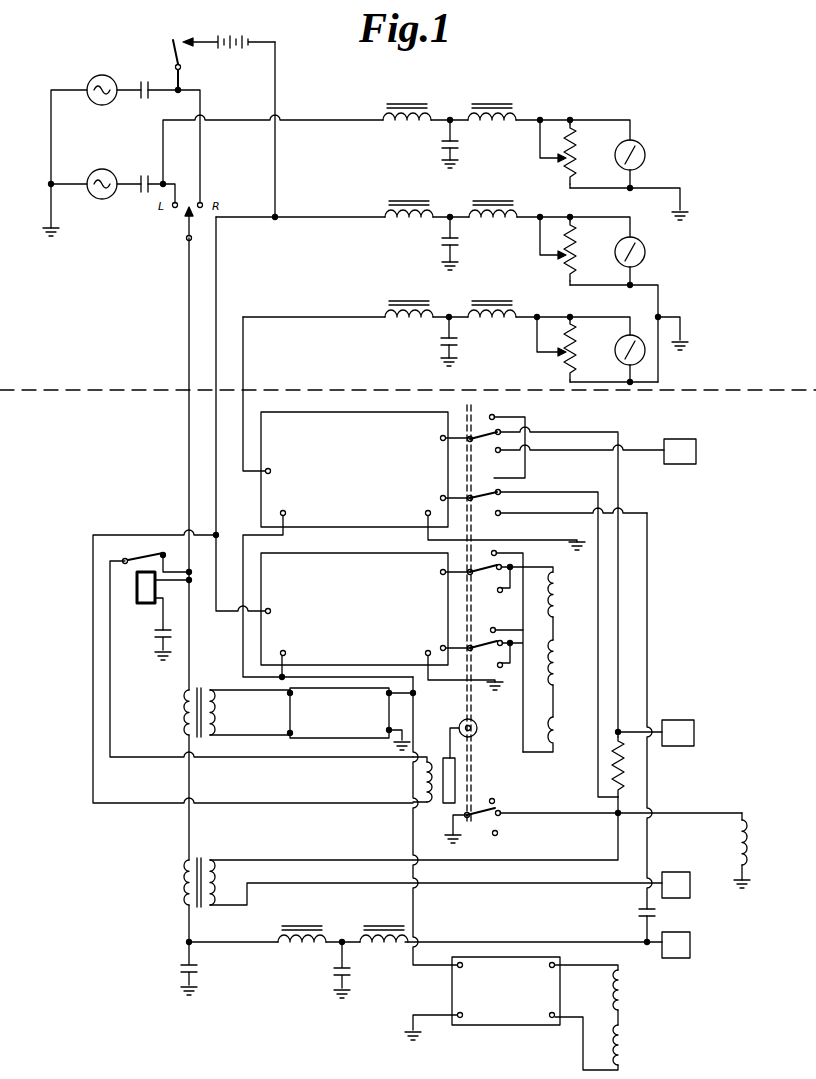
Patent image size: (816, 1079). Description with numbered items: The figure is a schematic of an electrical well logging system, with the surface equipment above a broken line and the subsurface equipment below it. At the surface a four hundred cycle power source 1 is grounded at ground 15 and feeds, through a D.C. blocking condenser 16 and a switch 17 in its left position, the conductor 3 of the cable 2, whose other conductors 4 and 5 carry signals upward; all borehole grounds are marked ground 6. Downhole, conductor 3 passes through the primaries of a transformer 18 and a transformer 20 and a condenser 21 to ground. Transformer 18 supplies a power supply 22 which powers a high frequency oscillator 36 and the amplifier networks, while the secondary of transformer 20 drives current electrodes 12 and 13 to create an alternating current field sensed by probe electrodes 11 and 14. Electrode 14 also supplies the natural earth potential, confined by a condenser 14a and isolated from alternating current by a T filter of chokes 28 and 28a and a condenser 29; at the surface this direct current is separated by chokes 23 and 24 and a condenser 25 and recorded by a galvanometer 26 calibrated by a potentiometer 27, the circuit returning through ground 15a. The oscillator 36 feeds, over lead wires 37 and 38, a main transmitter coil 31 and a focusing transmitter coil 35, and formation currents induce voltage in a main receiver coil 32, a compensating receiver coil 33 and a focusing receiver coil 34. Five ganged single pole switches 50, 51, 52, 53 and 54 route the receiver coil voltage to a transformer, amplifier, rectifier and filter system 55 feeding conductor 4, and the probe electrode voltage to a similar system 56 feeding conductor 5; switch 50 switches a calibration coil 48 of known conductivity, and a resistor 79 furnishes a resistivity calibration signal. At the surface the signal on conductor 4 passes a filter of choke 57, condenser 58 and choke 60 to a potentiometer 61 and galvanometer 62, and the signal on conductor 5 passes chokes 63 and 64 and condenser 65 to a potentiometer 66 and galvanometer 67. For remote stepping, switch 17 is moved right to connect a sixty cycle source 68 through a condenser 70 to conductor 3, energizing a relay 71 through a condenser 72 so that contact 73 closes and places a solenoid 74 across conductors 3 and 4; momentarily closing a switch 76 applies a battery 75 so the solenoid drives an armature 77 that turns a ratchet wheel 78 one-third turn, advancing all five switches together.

The power source 1 is at (104, 199).
The cable 2 is at (242, 370).
The conductor 3 is at (186, 344).
The conductor 4 is at (218, 315).
The conductor 5 is at (245, 359).
The ground 6 is at (582, 543).
The electrode 11 is at (698, 451).
The electrode 12 is at (696, 734).
The electrode 13 is at (700, 870).
The electrode 14 is at (692, 935).
The condenser 14a is at (646, 911).
The ground 15 is at (48, 226).
The ground 15a is at (688, 212).
The D.C. blocking condenser 16 is at (150, 176).
The switch 17 is at (185, 229).
The transformer 18 is at (186, 715).
The transformer 20 is at (184, 897).
The condenser 21 is at (182, 967).
The power supply apparatus 22 is at (290, 717).
The choke 23 is at (410, 108).
The choke 24 is at (492, 108).
The condenser 25 is at (440, 146).
The galvanometer 26 is at (648, 153).
The potentiometer 27 is at (578, 159).
The series choke 28 is at (312, 930).
The series choke 28a is at (392, 930).
The condenser 29 is at (333, 971).
The main transmitter coil 31 is at (626, 991).
The main receiver coil 32 is at (560, 666).
The compensating receiver coil 33 is at (560, 721).
The focusing receiver coil 34 is at (560, 601).
The focusing transmitter coil 35 is at (626, 1041).
The high frequency oscillator 36 is at (522, 1027).
The lead wire 37 is at (583, 1071).
The lead wire 38 is at (601, 968).
The calibration coil 48 is at (748, 823).
The switch 50 is at (470, 825).
The switch 51 is at (478, 652).
The switch 52 is at (480, 579).
The switch 53 is at (480, 501).
The switch 54 is at (482, 435).
The transformer, amplifier, rectifier, and filter system 55 is at (412, 553).
The transformer, amplifier, rectifier, and filter system 56 is at (320, 527).
The choke 57 is at (410, 206).
The condenser 58 is at (440, 243).
The choke 60 is at (492, 207).
The potentiometer 61 is at (578, 256).
The galvanometer 62 is at (648, 251).
The choke 63 is at (410, 306).
The choke 64 is at (490, 306).
The condenser 65 is at (440, 346).
The potentiometer 66 is at (565, 364).
The galvanometer 67 is at (618, 357).
The 60 cycle source of power 68 is at (112, 76).
The D.C. blocking condenser 70 is at (150, 98).
The 60 cycle relay 71 is at (137, 594).
The condenser 72 is at (156, 641).
The contact 73 is at (154, 553).
The solenoid 74 is at (414, 775).
The battery 75 is at (240, 38).
The switch 76 is at (168, 45).
The armature 77 is at (456, 777).
The ratchet wheel 78 is at (478, 731).
The resistor 79 is at (612, 771).